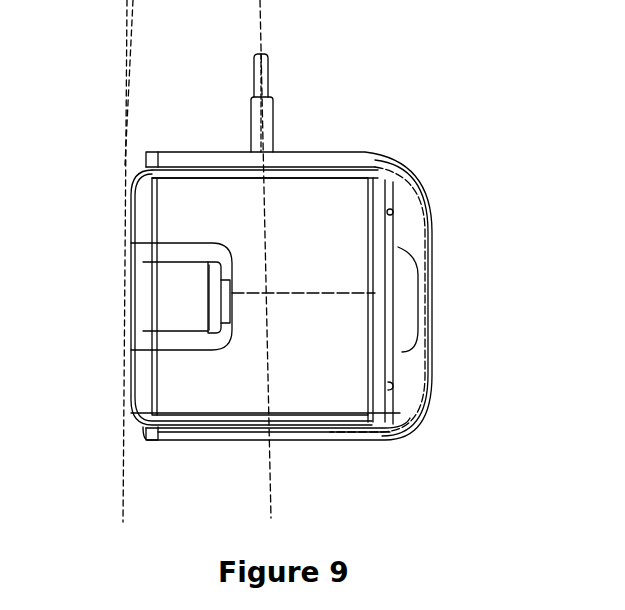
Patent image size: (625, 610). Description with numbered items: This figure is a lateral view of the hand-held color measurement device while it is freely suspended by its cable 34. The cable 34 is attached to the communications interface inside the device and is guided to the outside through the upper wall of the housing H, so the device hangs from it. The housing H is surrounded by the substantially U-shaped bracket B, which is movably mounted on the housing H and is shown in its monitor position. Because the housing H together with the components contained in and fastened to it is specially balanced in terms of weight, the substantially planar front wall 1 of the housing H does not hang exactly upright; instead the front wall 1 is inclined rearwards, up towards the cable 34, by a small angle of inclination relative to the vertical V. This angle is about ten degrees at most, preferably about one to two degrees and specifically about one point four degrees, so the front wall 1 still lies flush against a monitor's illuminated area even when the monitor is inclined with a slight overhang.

The front wall 1 is at (138, 222).
The cable 34 is at (265, 70).
The bracket B is at (431, 380).
The housing H is at (297, 240).
The vertical V is at (270, 475).